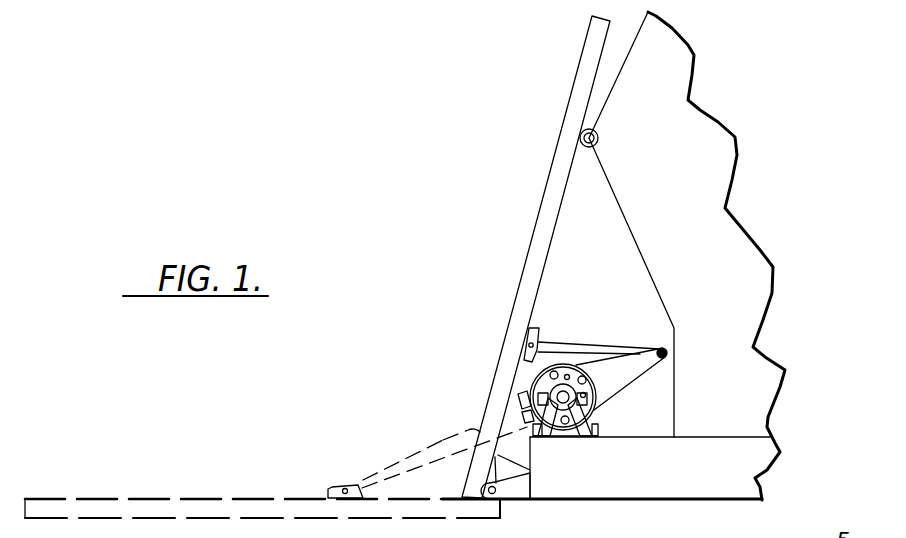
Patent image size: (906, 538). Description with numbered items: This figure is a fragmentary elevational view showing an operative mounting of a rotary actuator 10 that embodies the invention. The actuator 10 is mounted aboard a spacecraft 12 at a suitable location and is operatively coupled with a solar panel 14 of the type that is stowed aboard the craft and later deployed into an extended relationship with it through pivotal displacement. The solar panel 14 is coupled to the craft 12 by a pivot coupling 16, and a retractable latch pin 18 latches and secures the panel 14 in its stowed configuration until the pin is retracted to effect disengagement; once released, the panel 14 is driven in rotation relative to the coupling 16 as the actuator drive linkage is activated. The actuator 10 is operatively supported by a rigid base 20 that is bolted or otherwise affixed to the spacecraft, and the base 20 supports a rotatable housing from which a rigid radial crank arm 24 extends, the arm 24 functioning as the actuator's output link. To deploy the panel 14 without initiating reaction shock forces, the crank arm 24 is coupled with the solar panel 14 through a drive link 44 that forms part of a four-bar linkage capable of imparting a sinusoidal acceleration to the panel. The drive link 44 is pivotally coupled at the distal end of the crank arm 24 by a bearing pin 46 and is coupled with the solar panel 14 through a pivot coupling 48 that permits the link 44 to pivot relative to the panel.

The rotary actuator 10 is at (623, 401).
The spacecraft 12 is at (742, 217).
The solar panel 14 is at (541, 185).
The pivot coupling 16 is at (510, 508).
The retractable latch pin 18 is at (606, 139).
The rigid base 20 is at (585, 448).
The radial crank arm 24 is at (632, 368).
The drive link 44 is at (605, 345).
The bearing pin 46 is at (666, 349).
The pivot coupling 48 is at (530, 330).